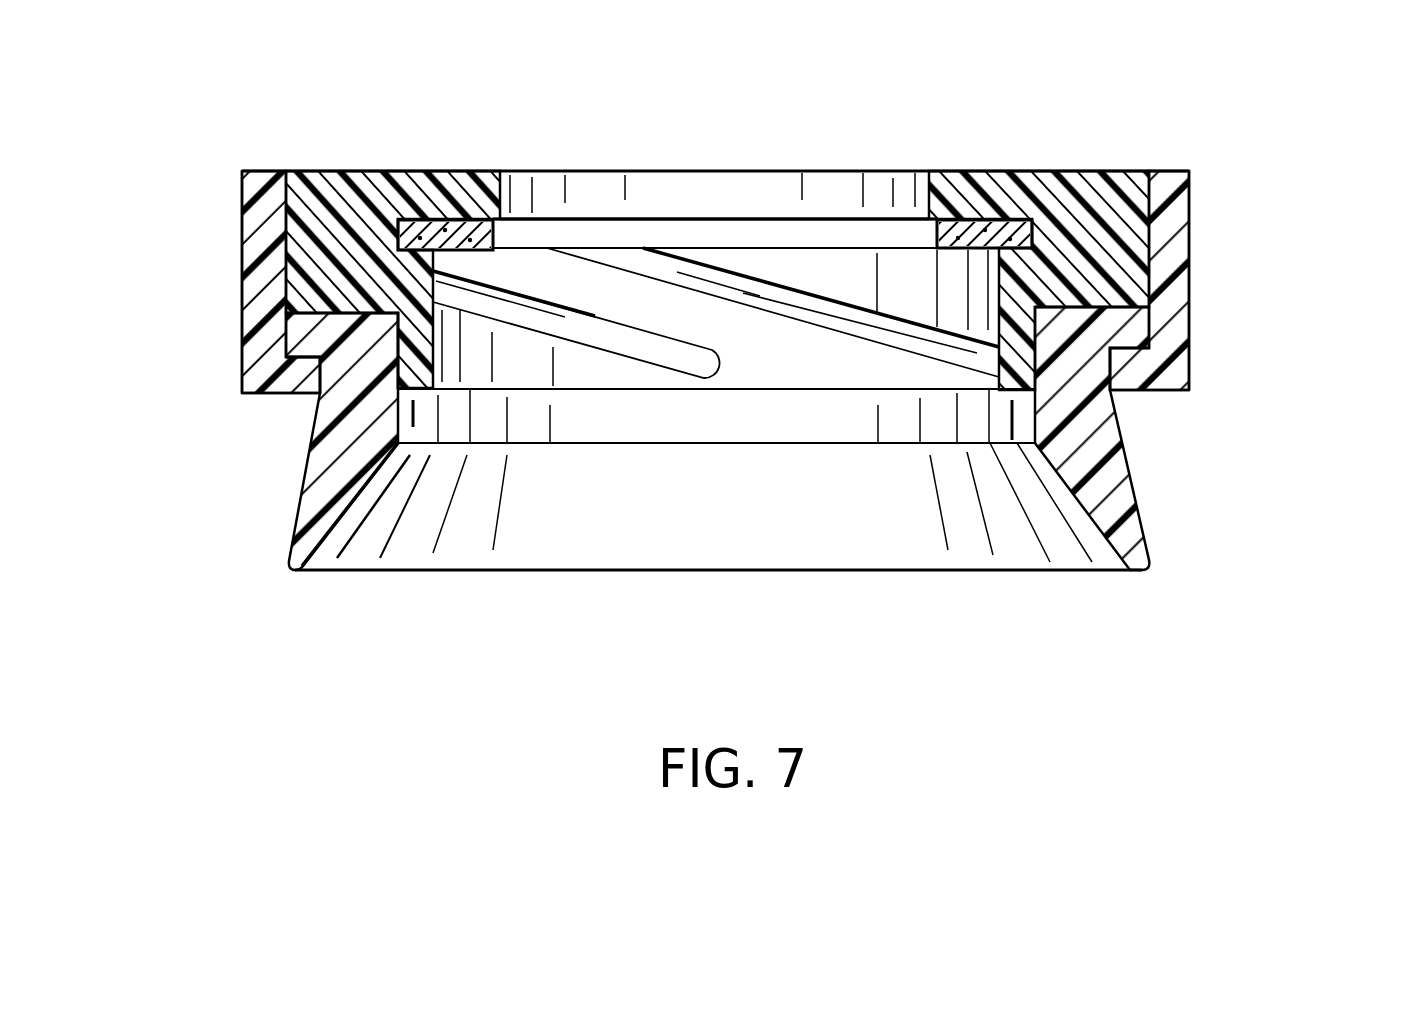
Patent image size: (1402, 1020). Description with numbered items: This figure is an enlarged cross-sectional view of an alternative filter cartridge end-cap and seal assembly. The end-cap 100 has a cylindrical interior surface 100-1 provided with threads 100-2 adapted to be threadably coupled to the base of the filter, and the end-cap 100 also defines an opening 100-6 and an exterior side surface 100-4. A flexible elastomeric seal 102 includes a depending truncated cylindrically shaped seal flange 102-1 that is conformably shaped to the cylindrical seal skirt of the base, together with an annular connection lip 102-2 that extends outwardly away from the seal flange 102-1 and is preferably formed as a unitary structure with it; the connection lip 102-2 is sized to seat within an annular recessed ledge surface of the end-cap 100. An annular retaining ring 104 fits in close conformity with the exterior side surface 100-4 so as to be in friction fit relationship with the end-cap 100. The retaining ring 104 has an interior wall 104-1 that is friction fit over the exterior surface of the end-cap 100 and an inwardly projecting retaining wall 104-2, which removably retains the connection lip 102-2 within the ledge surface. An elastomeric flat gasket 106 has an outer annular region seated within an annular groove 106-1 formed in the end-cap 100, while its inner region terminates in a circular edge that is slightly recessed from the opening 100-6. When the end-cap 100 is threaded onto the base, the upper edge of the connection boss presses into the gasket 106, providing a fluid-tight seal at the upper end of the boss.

The cartridge end-cap 100 is at (1012, 155).
The cylindrical interior surface 100-1 is at (833, 217).
The threads 100-2 is at (545, 322).
The exterior side surface 100-4 is at (243, 205).
The opening 100-6 is at (770, 180).
The seal 102 is at (263, 529).
The seal flange 102-1 is at (706, 541).
The connection lip 102-2 is at (290, 343).
The retaining ring 104 is at (1208, 235).
The interior wall 104-1 is at (242, 247).
The retaining wall 104-2 is at (275, 370).
The flat gasket 106 is at (455, 233).
The annular groove 106-1 is at (415, 223).